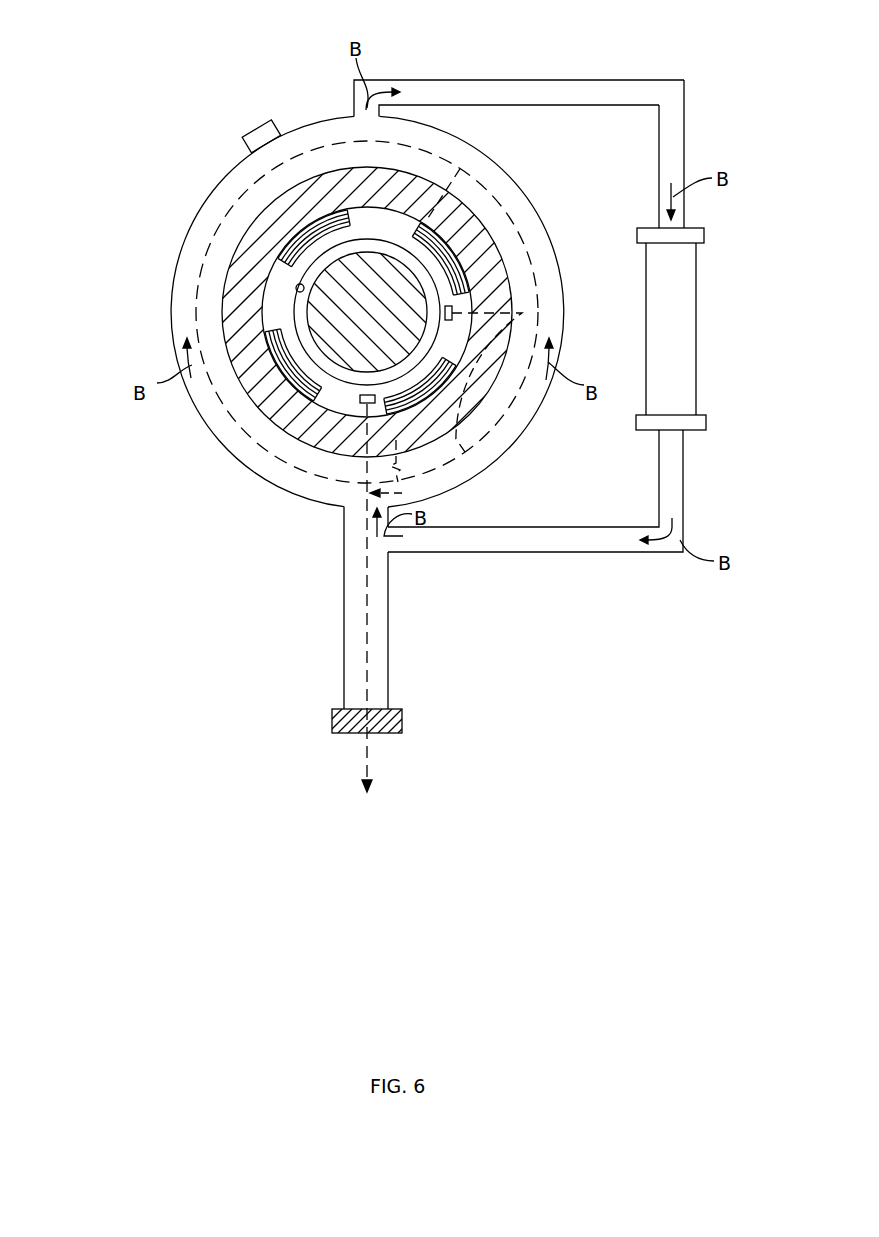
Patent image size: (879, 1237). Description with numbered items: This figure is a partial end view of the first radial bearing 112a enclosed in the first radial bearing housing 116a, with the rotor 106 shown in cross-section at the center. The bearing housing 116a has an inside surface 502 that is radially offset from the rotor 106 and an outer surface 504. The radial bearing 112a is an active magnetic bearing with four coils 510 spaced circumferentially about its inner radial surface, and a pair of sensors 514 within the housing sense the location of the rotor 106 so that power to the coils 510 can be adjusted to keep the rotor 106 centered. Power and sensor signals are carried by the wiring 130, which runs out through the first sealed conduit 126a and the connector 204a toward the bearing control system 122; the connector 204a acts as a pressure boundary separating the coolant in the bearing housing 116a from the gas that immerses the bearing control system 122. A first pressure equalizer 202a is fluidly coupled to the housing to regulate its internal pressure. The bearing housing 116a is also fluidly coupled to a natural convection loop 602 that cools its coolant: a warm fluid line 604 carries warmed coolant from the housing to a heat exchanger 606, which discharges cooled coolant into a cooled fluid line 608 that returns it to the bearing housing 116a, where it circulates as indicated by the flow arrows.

The first radial bearing housing 116a is at (91, 152).
The first pressure equalizer 202a is at (264, 128).
The outer surface 504 is at (192, 248).
The first radial bearing 112a is at (458, 218).
The coils 510 is at (283, 232).
The inside surface 502 is at (296, 289).
The rotor 106 is at (386, 314).
The sensors 514 is at (370, 393).
The wiring 130 is at (365, 615).
The first sealed conduit 126a is at (389, 622).
The connector 204a is at (395, 722).
The warm fluid line 604 is at (536, 80).
The natural convection loop 602 is at (690, 138).
The heat exchanger 606 is at (697, 347).
The cooled fluid line 608 is at (503, 543).
The bearing control system 122 is at (371, 819).